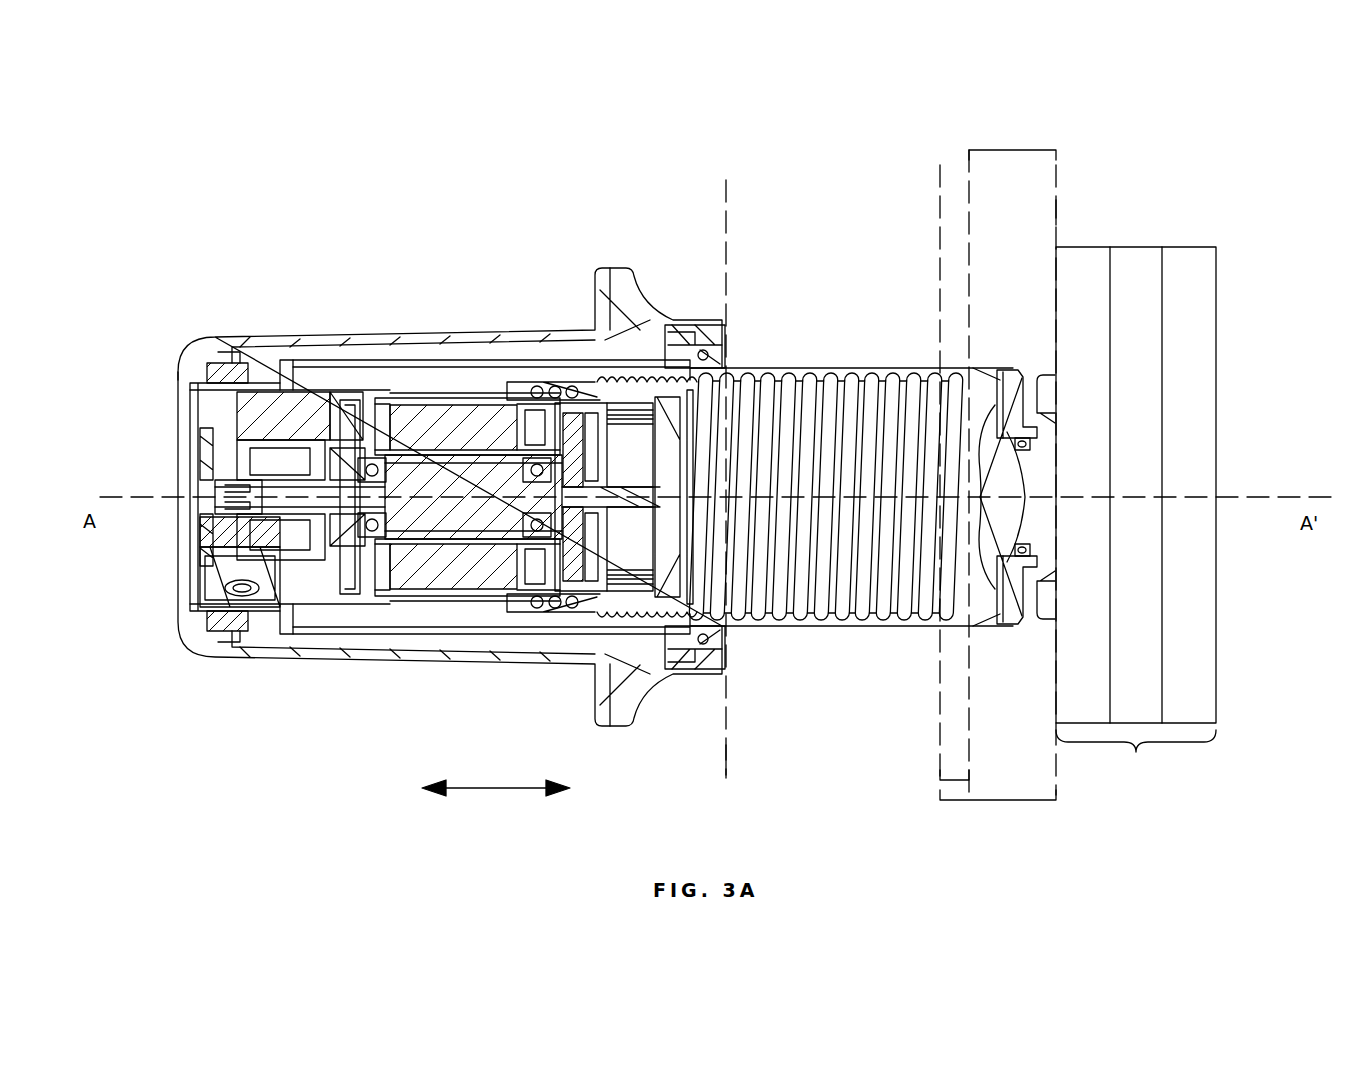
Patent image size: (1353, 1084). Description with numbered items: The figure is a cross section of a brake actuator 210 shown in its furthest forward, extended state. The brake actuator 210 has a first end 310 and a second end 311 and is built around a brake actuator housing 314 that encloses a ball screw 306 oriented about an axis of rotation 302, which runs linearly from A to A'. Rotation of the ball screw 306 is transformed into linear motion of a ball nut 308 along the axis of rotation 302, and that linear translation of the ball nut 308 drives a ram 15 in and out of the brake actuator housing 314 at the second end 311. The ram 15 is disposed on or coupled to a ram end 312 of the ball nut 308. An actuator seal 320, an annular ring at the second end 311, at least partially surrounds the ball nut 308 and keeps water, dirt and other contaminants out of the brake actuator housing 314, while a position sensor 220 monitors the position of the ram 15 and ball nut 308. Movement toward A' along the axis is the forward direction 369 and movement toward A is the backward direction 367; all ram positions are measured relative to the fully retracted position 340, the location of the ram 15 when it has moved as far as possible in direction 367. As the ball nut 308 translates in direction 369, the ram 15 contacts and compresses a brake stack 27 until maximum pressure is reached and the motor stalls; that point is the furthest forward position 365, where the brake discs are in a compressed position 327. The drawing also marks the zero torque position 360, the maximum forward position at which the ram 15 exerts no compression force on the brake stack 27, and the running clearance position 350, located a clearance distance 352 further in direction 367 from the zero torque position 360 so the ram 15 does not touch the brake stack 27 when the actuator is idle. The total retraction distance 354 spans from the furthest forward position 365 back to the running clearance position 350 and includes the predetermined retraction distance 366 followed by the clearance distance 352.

The brake actuator 210 is at (217, 190).
The position sensor 220 is at (178, 342).
The axis of rotation 302 is at (126, 492).
The ball screw 306 is at (440, 490).
The ball nut 308 is at (852, 627).
The first end 310 is at (199, 700).
The second end 311 is at (732, 690).
The ram end 312 is at (1040, 648).
The brake actuator housing 314 is at (312, 350).
The actuator seal 320 is at (688, 345).
The compressed position 327 is at (1136, 753).
The fully retracted position 340 is at (729, 258).
The running clearance position 350 is at (938, 182).
The clearance distance 352 is at (955, 782).
The total retraction distance 354 is at (1020, 802).
The zero torque position 360 is at (967, 172).
The furthest forward position 365 is at (1055, 212).
The predetermined retraction distance 366 is at (1014, 150).
The direction 367 is at (438, 797).
The direction 369 is at (550, 797).
The ram 15 is at (1048, 378).
The brake stack 27 is at (1140, 232).